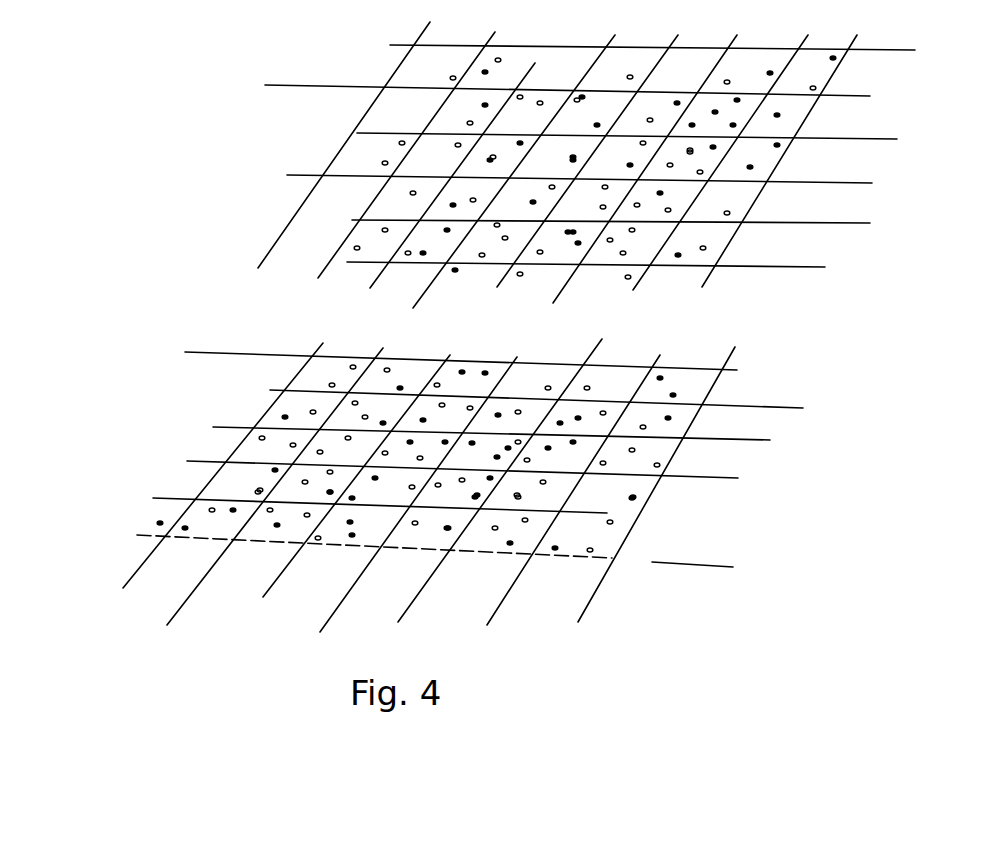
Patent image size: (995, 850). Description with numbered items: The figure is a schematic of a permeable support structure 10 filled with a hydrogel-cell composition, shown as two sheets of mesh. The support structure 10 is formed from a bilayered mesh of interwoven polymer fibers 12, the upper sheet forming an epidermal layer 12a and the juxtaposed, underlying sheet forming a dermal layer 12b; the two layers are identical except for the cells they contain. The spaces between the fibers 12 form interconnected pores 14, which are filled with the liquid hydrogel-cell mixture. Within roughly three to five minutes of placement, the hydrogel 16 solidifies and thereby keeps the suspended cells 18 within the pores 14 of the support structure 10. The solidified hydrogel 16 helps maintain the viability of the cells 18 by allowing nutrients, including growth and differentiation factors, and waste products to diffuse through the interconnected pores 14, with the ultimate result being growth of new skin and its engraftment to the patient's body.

The support structure 10 is at (53, 567).
The epidermal layer 12a is at (120, 10).
The dermal layer 12b is at (116, 583).
The interwoven polymer fibers 12 is at (643, 274).
The interconnected pores 14 is at (819, 96).
The hydrogel 16 is at (562, 67).
The cells 18 is at (520, 275).